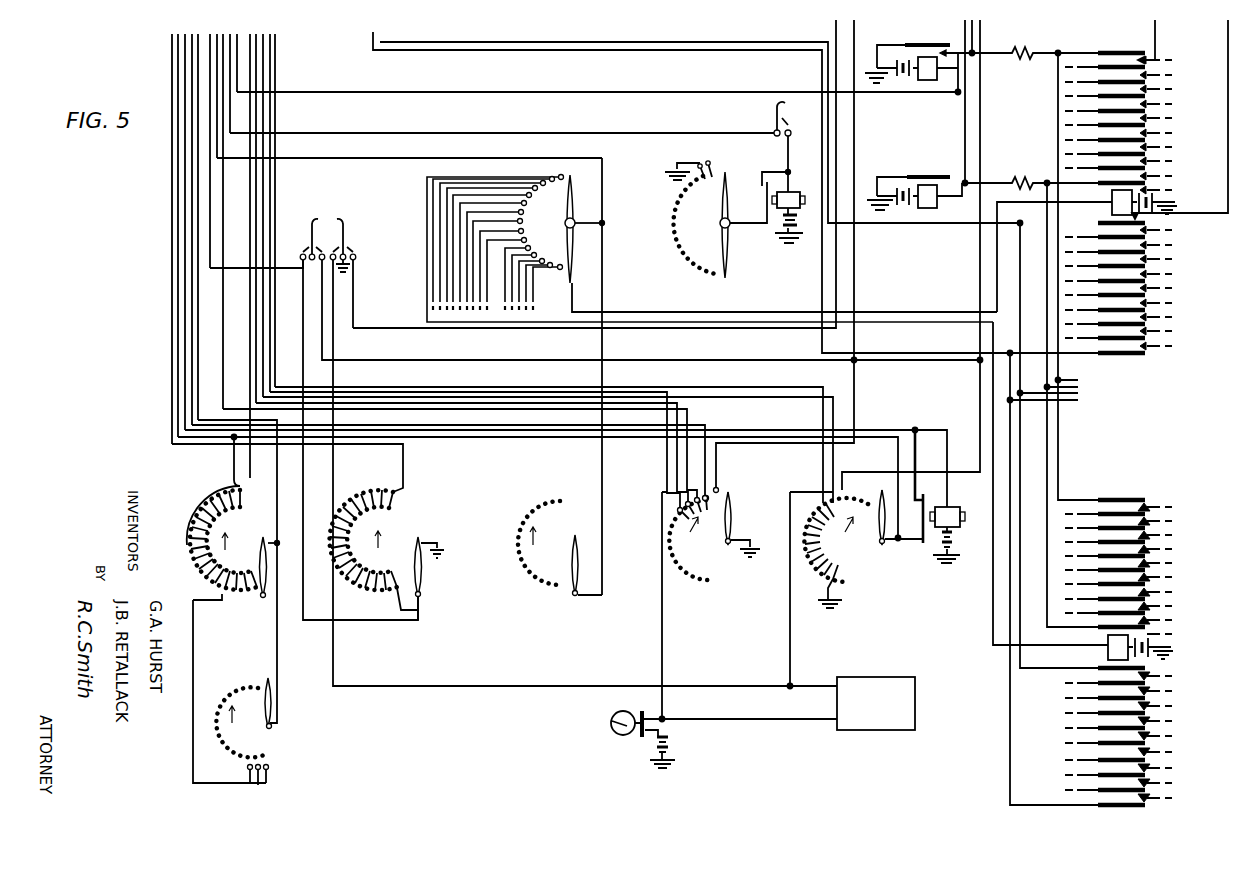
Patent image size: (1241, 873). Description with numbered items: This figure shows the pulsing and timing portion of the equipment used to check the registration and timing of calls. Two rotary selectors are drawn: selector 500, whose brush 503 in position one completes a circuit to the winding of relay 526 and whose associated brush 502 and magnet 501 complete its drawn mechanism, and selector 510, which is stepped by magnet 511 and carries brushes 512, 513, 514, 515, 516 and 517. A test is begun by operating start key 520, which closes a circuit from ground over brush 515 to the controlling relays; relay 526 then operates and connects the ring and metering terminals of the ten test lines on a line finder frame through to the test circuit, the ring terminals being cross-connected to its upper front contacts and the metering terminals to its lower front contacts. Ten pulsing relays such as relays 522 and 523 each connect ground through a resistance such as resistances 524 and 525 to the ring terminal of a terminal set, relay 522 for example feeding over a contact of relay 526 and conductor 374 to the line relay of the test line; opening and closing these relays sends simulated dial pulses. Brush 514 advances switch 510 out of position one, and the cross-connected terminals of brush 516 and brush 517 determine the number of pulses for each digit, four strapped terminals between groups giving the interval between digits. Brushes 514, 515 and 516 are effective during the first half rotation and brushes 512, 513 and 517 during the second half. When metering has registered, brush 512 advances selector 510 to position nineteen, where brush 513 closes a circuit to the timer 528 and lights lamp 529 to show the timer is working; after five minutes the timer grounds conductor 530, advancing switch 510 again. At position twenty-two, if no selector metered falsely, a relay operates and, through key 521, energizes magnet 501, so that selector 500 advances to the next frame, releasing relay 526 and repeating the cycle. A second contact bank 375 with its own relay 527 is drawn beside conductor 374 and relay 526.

The selector 500 is at (589, 124).
The magnet 501 is at (788, 188).
The rotary switch 502 is at (720, 226).
The brush 503 is at (560, 225).
The selector 510 is at (488, 461).
The magnet 511 is at (950, 507).
The brush 512 is at (863, 549).
The brush 513 is at (714, 534).
The brush 514 is at (548, 548).
The brush 515 is at (387, 555).
The brush 516 is at (235, 636).
The brush 517 is at (243, 731).
The start key 520 is at (326, 218).
The key 521 is at (773, 107).
The relay 522 is at (926, 82).
The relay 523 is at (926, 186).
The resistance 524 is at (1027, 62).
The resistance 525 is at (1028, 178).
The relay 526 is at (1110, 207).
The relay 527 is at (1106, 649).
The timer 528 is at (861, 731).
The lamp 529 is at (618, 740).
The conductor 530 is at (820, 683).
The conductor 374 is at (1158, 42).
The contact bank 375 is at (1217, 222).